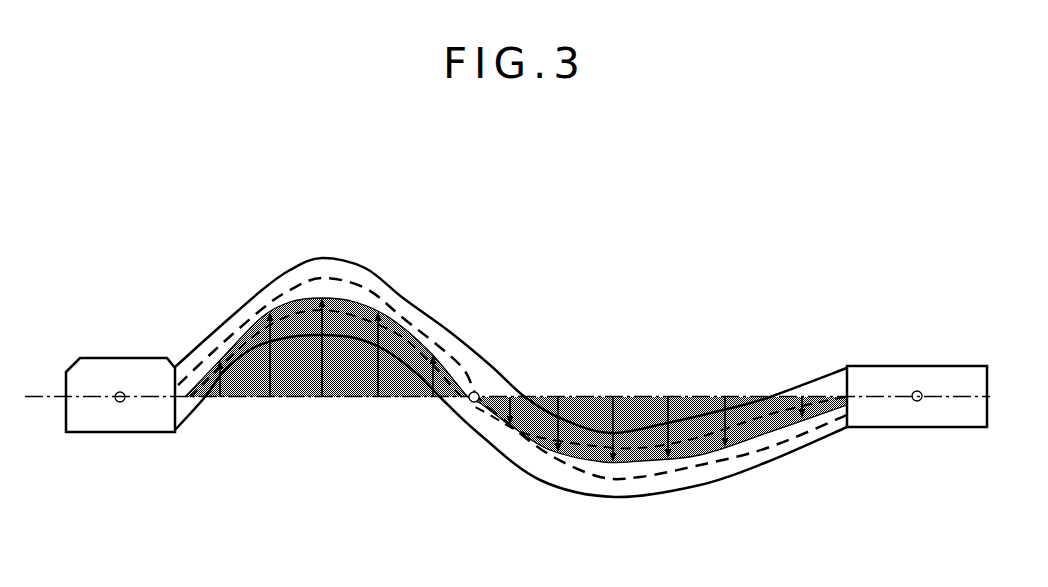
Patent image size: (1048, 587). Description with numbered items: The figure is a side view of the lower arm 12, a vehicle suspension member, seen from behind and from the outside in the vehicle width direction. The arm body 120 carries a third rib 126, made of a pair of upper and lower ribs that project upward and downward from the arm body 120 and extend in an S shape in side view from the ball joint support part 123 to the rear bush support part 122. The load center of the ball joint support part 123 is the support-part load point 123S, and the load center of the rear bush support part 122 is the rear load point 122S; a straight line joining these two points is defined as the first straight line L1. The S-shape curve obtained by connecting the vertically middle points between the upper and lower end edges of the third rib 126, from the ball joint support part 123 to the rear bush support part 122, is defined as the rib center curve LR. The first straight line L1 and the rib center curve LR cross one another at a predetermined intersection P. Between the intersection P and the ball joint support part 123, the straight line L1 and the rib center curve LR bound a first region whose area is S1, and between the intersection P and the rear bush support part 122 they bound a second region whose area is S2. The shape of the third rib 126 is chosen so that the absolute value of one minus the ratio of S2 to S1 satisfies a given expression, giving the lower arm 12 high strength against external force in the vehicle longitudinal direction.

The lower arm 12 is at (840, 264).
The arm body 120 is at (353, 283).
The third rib 126 is at (306, 256).
The rear bush support part 122 is at (960, 412).
The rear load point 122S is at (918, 390).
The ball joint support part 123 is at (82, 420).
The support-part load point 123S is at (120, 390).
The intersection P is at (481, 392).
The first region S1 is at (286, 374).
The second region S2 is at (641, 412).
The first straight line L1 is at (360, 400).
The rib center curve LR is at (702, 468).